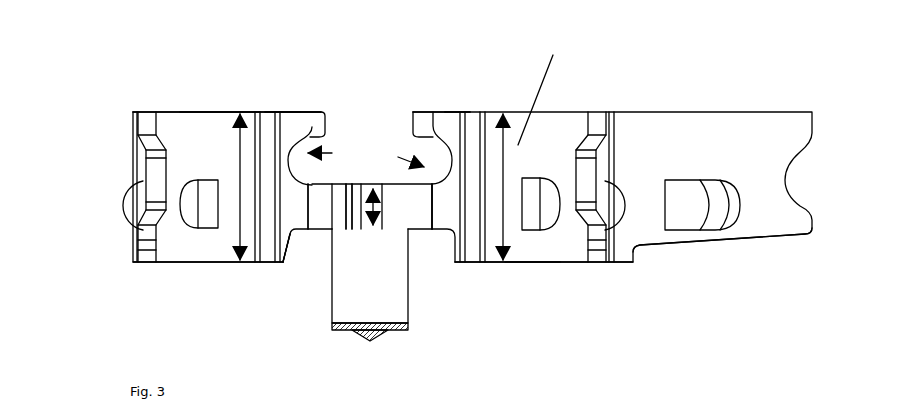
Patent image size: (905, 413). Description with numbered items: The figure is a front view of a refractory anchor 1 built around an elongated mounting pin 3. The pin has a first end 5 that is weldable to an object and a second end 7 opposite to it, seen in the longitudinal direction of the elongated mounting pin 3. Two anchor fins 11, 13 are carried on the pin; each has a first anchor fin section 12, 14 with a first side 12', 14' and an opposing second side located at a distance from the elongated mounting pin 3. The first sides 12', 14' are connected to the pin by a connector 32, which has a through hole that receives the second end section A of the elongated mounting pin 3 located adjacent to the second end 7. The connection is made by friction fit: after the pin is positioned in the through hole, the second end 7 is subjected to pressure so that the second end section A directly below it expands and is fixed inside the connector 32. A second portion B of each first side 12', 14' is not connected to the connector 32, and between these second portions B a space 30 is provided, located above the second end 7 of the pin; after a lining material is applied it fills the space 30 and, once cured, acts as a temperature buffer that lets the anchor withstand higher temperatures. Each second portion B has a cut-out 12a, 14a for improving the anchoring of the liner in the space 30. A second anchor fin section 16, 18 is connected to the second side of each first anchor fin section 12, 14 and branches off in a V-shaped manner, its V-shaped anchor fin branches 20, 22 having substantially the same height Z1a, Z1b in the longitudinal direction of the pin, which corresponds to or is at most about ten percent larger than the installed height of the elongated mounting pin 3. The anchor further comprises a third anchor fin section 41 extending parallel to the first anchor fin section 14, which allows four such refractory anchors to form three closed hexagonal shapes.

The refractory anchor 1 is at (94, 83).
The elongated mounting pin 3 is at (395, 299).
The first end 5 is at (346, 333).
The second end 7 is at (353, 184).
The anchor fin 11 is at (200, 294).
The first anchor fin section 12 is at (338, 234).
The first side 12' is at (242, 282).
The cut-out 12a is at (312, 114).
The anchor fin 13 is at (609, 286).
The first anchor fin section 14 is at (431, 260).
The first side 14' is at (515, 147).
The cut-out 14a is at (432, 111).
The second anchor fin section 16 is at (222, 86).
The second anchor fin section 18 is at (528, 285).
The V-shaped anchor fin branch 20 is at (210, 262).
The V-shaped anchor fin branch 22 is at (552, 250).
The space 30 is at (362, 102).
The connector 32 is at (330, 238).
The third anchor fin section 41 is at (775, 212).
The height Z1a is at (216, 187).
The height Z1b is at (538, 147).
The second end section A is at (386, 207).
The second portion B is at (366, 153).